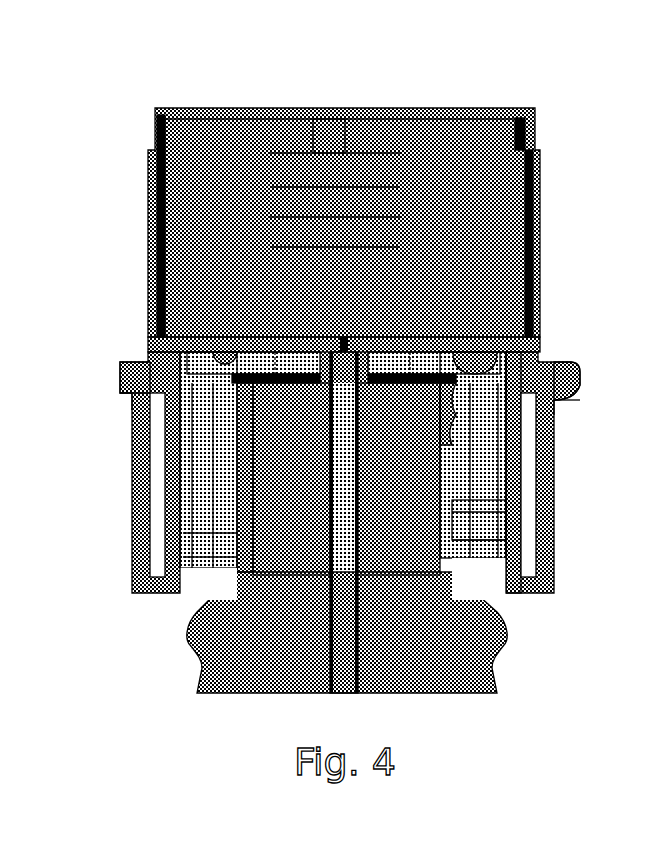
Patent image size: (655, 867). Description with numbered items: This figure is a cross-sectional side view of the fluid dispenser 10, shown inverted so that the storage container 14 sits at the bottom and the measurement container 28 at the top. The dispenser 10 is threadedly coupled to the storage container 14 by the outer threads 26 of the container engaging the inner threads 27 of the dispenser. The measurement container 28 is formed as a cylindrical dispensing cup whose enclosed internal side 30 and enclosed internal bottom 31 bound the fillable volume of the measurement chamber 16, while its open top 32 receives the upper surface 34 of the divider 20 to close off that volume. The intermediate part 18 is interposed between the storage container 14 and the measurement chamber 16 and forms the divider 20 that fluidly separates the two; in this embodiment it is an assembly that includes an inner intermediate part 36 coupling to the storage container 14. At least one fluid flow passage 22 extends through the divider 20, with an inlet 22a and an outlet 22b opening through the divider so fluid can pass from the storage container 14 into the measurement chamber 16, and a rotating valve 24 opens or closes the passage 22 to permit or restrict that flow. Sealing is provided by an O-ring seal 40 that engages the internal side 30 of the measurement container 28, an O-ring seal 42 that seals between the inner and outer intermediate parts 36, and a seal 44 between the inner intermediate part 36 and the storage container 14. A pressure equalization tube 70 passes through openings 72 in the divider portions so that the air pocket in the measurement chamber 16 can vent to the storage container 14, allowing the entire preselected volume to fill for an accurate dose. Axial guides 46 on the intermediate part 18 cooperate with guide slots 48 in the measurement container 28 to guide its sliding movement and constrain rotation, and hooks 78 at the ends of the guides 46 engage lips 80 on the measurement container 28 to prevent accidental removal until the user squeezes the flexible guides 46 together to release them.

The fluid dispenser 10 is at (168, 77).
The storage container 14 is at (502, 668).
The measurement chamber 16 is at (478, 172).
The intermediate part 18 is at (76, 472).
The divider 20 is at (389, 332).
The fluid flow passage 22 is at (273, 327).
The inlet 22a is at (344, 387).
The outlet 22b is at (283, 337).
The valve 24 is at (258, 348).
The outer threads 26 is at (524, 466).
The inner threads 27 is at (470, 445).
The measurement container 28 is at (154, 132).
The internal side 30 is at (174, 210).
The internal bottom 31 is at (208, 125).
The open top 32 is at (556, 400).
The upper surface 34 is at (506, 346).
The inner intermediate part 36 is at (406, 398).
The O-ring seal 40 is at (165, 347).
The O-ring seal 42 is at (508, 350).
The seal 44 is at (243, 430).
The axial guide 46 is at (132, 516).
The guide slot 48 is at (130, 395).
The pressure equalization tube 70 is at (333, 668).
The opening 72 is at (356, 346).
The hook 78 is at (120, 377).
The lip 80 is at (114, 389).